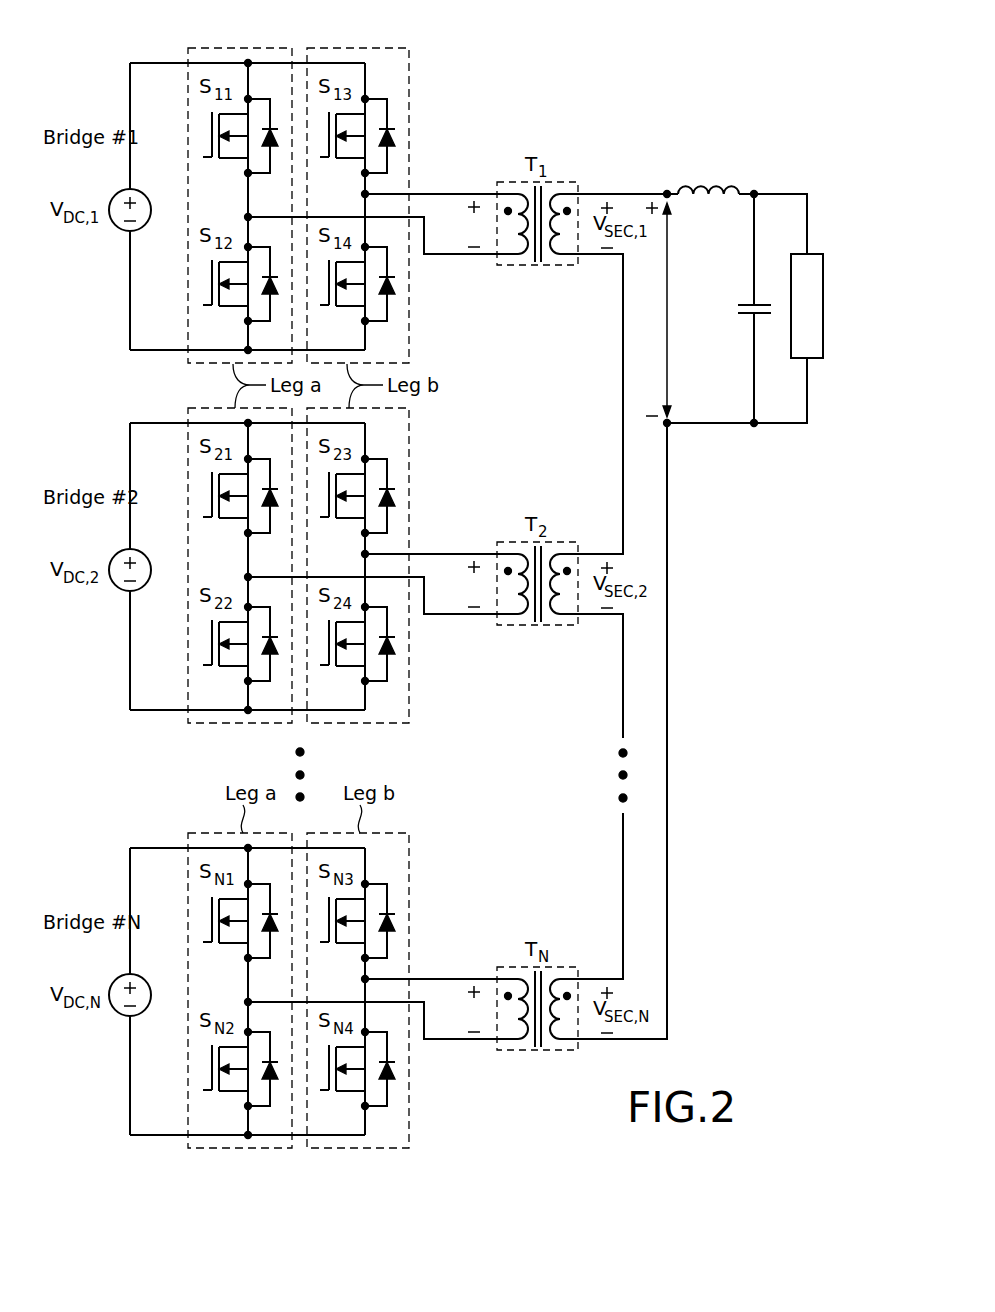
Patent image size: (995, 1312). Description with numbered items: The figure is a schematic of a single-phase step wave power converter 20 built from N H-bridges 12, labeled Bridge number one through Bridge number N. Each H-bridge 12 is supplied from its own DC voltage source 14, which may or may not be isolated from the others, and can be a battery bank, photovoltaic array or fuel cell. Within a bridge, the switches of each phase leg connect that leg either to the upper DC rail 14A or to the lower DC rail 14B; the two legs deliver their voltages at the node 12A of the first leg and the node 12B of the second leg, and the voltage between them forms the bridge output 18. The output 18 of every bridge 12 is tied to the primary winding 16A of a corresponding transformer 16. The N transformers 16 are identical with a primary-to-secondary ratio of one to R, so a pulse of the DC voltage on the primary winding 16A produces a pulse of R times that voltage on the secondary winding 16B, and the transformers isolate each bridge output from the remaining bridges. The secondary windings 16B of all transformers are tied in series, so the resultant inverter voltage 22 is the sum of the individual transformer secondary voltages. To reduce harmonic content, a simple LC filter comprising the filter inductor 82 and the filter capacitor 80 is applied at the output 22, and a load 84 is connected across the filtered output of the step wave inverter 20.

The H-bridge 12 is at (108, 78).
The DC voltage source 14 is at (151, 200).
The upper DC rail 14A is at (160, 62).
The lower DC rail 14B is at (147, 350).
The node of Leg a 12A is at (476, 256).
The node of Leg b 12B is at (455, 193).
The transformer 16 is at (540, 267).
The primary winding 16A is at (565, 192).
The secondary winding 16B is at (508, 192).
The output of the bridge 18 is at (451, 249).
The step wave power converter 20 is at (639, 79).
The resultant inverter voltage 22 is at (670, 371).
The filter capacitor 80 is at (745, 303).
The filter inductor 82 is at (718, 185).
The load 84 is at (791, 268).